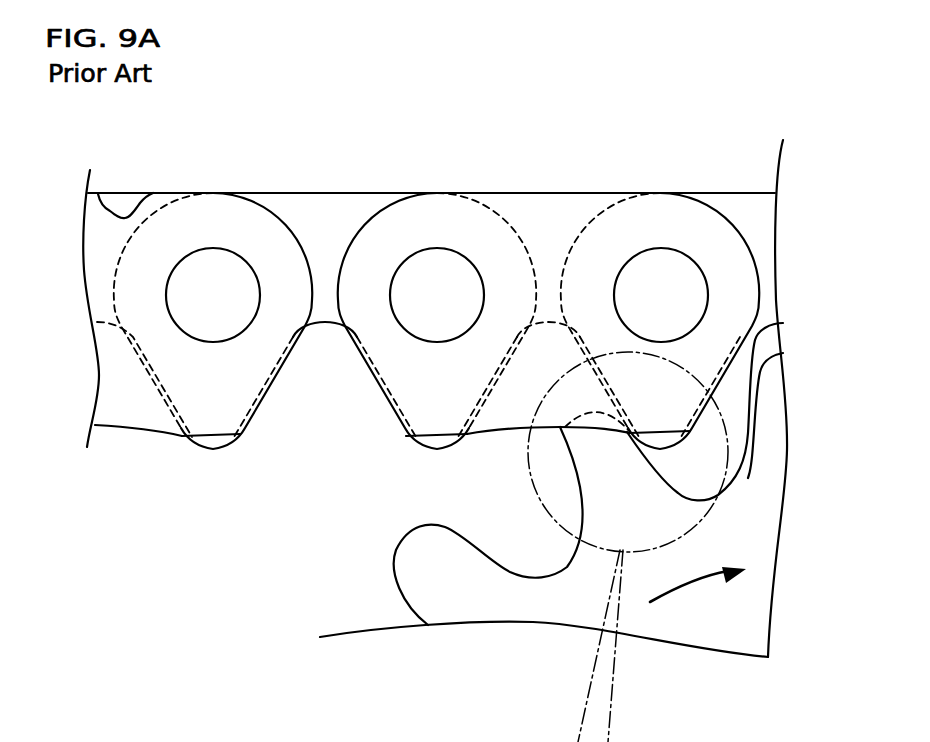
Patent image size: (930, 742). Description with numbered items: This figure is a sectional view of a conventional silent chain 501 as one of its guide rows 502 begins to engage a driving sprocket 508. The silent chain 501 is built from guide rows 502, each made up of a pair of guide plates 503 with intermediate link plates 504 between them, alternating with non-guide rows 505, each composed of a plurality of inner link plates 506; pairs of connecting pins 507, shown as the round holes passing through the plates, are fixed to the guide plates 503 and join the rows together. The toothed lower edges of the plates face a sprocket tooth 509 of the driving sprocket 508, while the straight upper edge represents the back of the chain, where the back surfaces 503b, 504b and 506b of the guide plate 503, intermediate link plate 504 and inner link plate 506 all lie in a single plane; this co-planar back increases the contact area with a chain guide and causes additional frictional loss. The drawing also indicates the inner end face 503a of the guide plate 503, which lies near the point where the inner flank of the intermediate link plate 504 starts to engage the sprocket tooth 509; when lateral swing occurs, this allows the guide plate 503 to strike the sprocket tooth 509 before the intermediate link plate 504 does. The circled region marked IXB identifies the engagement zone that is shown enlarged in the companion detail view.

The silent chain 501 is at (742, 104).
The guide row 502 is at (577, 170).
The guide plate 503 is at (529, 207).
The inner end face of guide plate 503a is at (518, 432).
The back surface of guide plate 503b is at (499, 192).
The intermediate link plate 504 is at (541, 333).
The back surface of intermediate link plate 504b is at (141, 190).
The non-guide row 505 is at (363, 170).
The inner link plate 506 is at (313, 220).
The back surface of inner link plate 506b is at (747, 192).
The connecting pin 507 is at (693, 288).
The driving sprocket 508 is at (747, 592).
The sprocket tooth 509 is at (590, 473).
The detail view indicator IXB is at (707, 512).